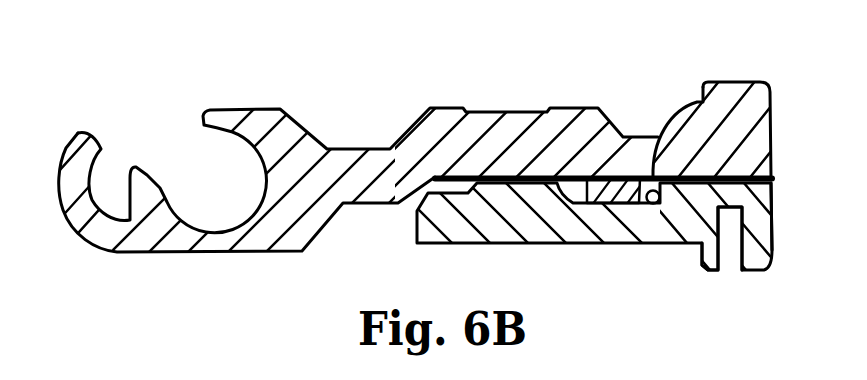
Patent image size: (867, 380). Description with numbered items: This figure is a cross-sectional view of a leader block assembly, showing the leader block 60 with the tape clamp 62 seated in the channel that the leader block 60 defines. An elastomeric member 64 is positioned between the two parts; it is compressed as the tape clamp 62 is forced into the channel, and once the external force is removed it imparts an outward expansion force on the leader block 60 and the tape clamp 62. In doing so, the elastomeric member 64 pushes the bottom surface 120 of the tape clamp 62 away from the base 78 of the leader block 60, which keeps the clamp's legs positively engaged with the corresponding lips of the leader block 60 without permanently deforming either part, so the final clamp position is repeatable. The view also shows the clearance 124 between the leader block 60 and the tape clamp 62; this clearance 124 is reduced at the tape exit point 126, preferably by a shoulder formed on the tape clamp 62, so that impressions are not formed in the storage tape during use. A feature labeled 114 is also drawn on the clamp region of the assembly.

The leader block 60 is at (500, 116).
The tape clamp 62 is at (490, 248).
The elastomeric member 64 is at (632, 166).
The base 78 is at (657, 170).
The slotted leg 114 is at (668, 210).
The bottom surface 120 is at (730, 176).
The clearance 124 is at (530, 172).
The tape exit point 126 is at (773, 181).